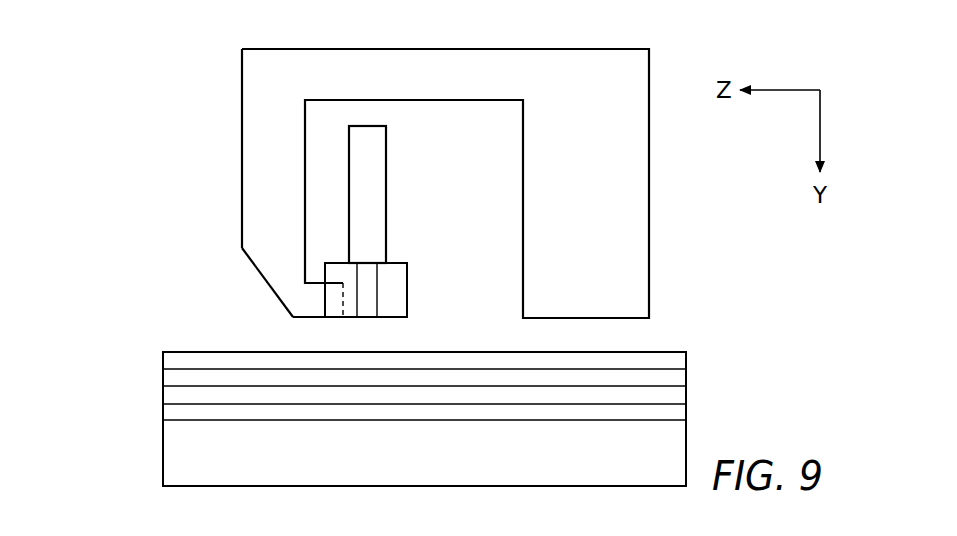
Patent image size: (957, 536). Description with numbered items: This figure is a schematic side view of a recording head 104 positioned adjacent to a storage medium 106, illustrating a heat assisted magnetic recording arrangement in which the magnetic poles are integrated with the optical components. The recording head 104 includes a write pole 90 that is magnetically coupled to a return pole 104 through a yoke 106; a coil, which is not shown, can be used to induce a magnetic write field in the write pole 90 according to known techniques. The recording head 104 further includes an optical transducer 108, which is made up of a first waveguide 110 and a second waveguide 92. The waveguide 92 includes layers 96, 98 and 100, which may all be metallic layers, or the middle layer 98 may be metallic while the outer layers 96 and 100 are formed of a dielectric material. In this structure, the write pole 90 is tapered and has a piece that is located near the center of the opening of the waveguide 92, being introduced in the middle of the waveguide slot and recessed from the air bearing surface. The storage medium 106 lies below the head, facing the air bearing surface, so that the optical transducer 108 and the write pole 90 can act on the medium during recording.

The write pole 90 is at (262, 267).
The second waveguide 92 is at (422, 262).
The layer 96 is at (348, 318).
The layer 98 is at (367, 314).
The layer 100 is at (402, 298).
The recording head 104 is at (638, 248).
The storage medium 106 is at (568, 63).
The optical transducer 108 is at (402, 198).
The first waveguide 110 is at (375, 158).